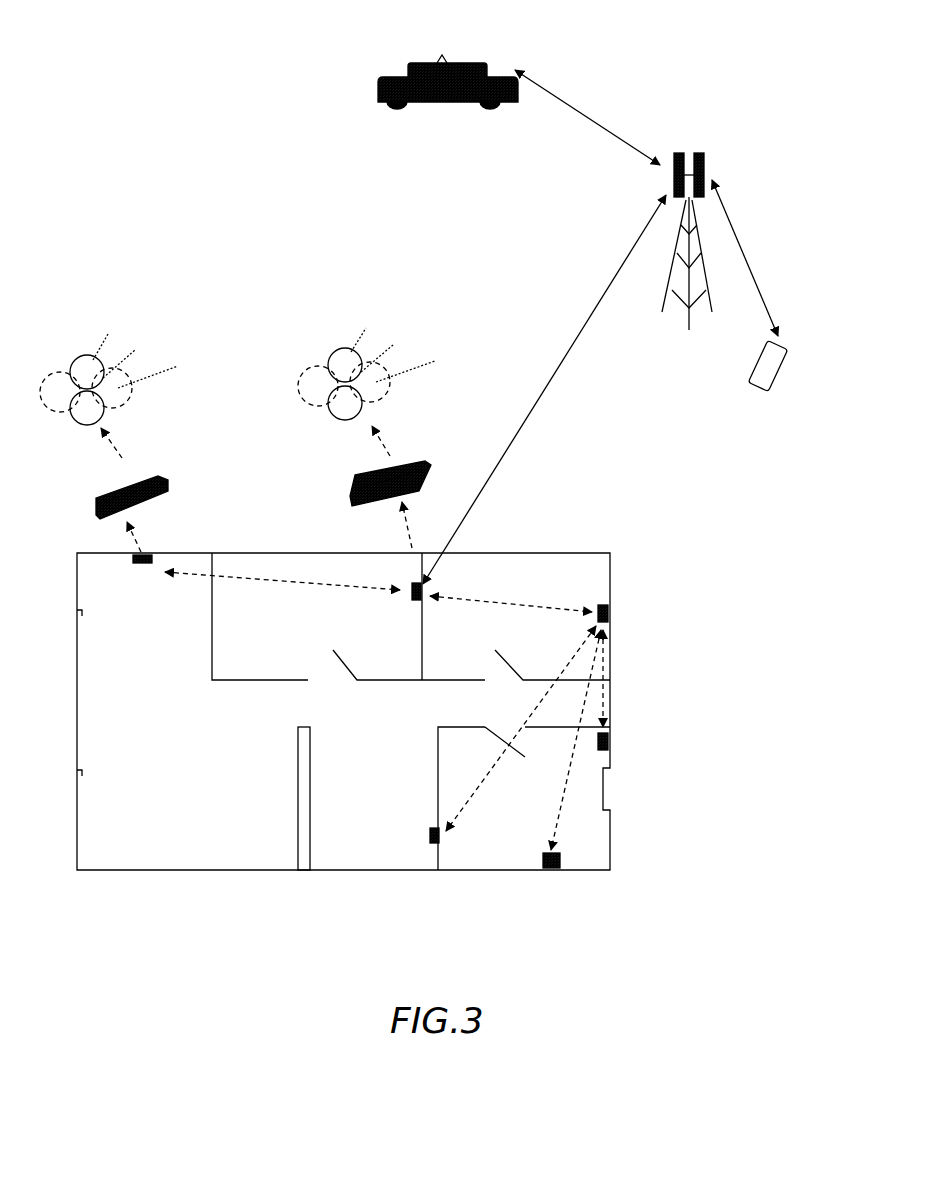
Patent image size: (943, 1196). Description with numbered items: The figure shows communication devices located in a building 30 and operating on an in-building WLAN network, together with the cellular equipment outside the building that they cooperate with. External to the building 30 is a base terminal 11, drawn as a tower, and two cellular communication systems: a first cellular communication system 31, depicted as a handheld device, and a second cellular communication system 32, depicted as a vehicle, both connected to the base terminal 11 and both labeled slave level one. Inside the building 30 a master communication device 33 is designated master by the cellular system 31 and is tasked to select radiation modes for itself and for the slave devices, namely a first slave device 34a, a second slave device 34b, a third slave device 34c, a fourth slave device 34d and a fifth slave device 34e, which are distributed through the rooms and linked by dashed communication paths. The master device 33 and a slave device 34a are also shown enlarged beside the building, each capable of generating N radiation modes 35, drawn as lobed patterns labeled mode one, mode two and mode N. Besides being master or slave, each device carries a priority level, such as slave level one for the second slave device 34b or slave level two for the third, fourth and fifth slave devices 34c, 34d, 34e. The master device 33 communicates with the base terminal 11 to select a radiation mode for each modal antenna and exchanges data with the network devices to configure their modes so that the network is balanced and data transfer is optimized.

The base terminal 11 is at (708, 168).
The building 30 is at (190, 871).
The first cellular communication system 31 is at (779, 380).
The second cellular communication system 32 is at (440, 103).
The master communication device 33 is at (352, 491).
The first slave device 34a is at (172, 483).
The second slave device 34b is at (608, 612).
The third slave device 34c is at (610, 742).
The fourth slave device 34d is at (560, 862).
The fifth slave device 34e is at (430, 838).
The radiation modes 35 is at (70, 369).